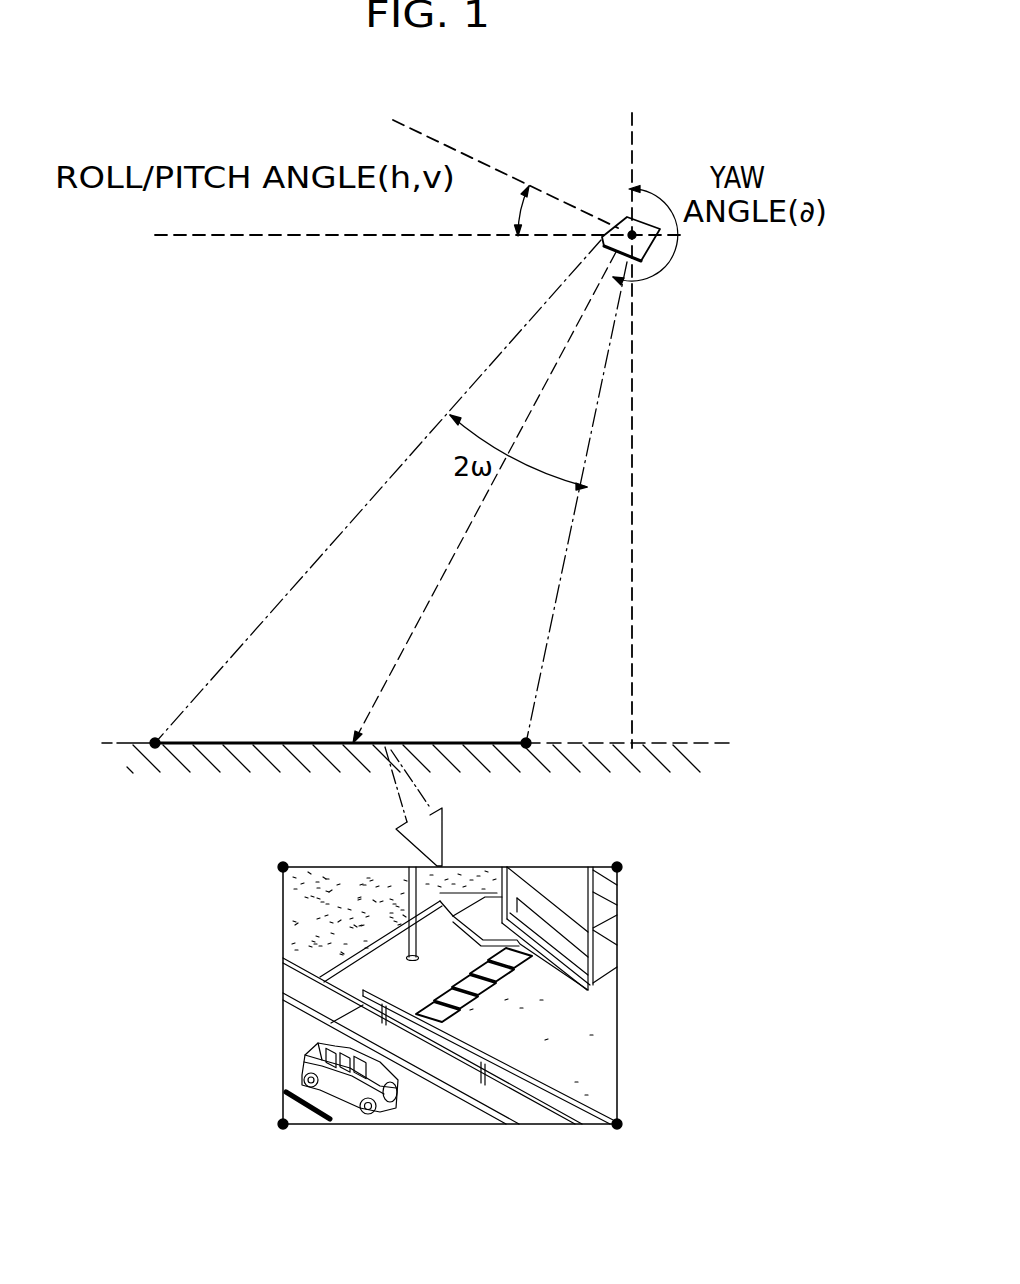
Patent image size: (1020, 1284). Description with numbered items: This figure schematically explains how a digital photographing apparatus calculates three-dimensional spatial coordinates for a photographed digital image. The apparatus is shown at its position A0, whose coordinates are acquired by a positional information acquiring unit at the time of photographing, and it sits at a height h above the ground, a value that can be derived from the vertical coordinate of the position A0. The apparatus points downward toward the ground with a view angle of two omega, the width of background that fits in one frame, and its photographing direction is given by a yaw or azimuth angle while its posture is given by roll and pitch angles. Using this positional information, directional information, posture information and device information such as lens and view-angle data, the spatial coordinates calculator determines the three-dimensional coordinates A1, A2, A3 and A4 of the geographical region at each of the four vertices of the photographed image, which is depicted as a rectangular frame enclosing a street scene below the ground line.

The positional information of the digital photographing apparatus A0 is at (631, 231).
The 3D spatial coordinate of a photographed image vertex A1 is at (262, 1145).
The 3D spatial coordinate of a photographed image vertex A2 is at (623, 1144).
The 3D spatial coordinate of a photographed image vertex A3 is at (620, 849).
The 3D spatial coordinate of a photographed image vertex A4 is at (264, 850).
The height from the ground to the digital photographing apparatus h is at (663, 741).